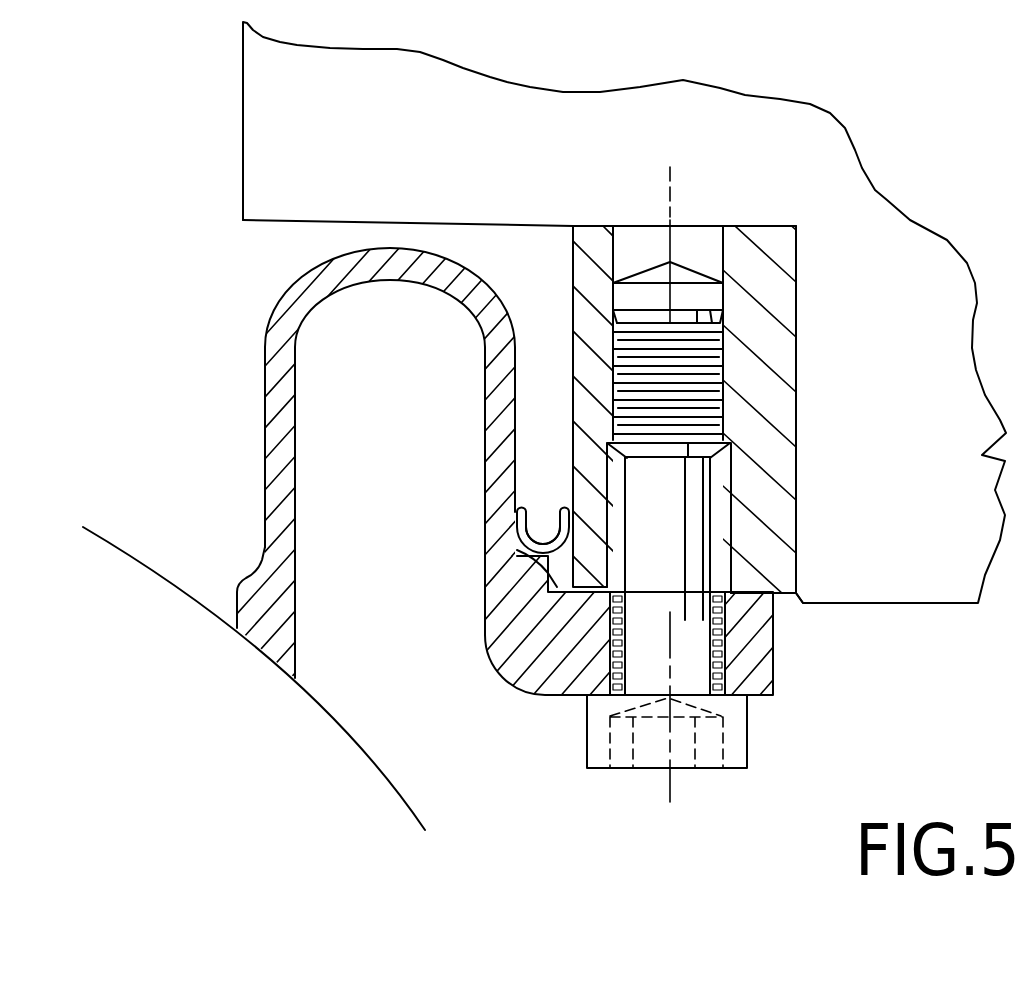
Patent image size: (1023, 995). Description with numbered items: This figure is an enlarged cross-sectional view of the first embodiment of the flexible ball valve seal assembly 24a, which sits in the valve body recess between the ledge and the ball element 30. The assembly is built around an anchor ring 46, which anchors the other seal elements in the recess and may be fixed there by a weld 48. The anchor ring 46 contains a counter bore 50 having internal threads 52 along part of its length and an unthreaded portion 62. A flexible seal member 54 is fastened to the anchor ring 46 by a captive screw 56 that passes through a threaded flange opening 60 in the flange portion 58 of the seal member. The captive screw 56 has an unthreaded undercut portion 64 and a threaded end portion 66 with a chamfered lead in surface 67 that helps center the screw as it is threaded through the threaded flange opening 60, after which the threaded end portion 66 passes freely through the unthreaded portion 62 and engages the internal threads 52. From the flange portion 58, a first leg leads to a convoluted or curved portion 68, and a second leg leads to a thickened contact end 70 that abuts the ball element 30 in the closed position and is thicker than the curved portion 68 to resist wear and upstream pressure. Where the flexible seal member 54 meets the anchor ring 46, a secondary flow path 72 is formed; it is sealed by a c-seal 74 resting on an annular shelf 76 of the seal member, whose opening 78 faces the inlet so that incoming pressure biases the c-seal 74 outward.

The flexible ball valve seal assembly 24a is at (845, 218).
The ball element 30 is at (162, 578).
The anchor ring 46 is at (777, 293).
The weld 48 is at (583, 255).
The counter bore 50 is at (724, 254).
The internal threads 52 is at (712, 373).
The flexible seal member 54 is at (483, 630).
The captive screw 56 is at (694, 548).
The flange portion 58 is at (553, 697).
The threaded flange opening 60 is at (722, 632).
The unthreaded portion 62 is at (723, 490).
The undercut portion 64 is at (697, 480).
The threaded end portion 66 is at (724, 326).
The chamfered lead in surface 67 is at (623, 323).
The curved portion 68 is at (392, 332).
The thickened contact end 70 is at (262, 590).
The secondary flow path 72 is at (777, 593).
The c-seal 74 is at (520, 520).
The annular shelf 76 is at (483, 597).
The opening 78 is at (542, 530).